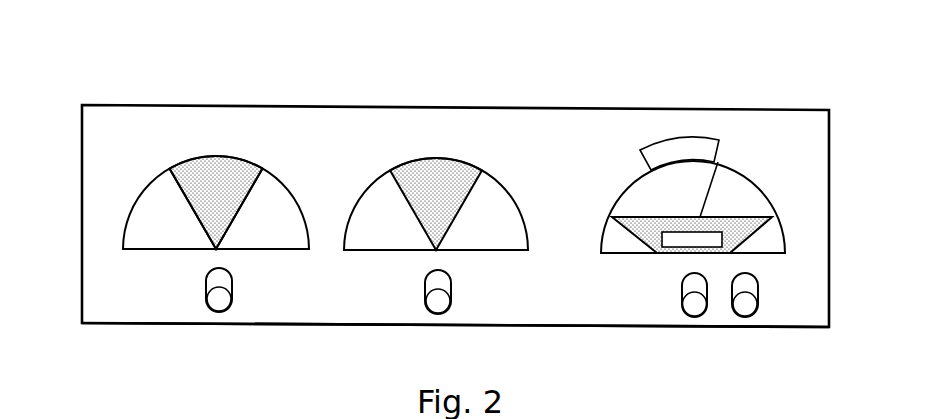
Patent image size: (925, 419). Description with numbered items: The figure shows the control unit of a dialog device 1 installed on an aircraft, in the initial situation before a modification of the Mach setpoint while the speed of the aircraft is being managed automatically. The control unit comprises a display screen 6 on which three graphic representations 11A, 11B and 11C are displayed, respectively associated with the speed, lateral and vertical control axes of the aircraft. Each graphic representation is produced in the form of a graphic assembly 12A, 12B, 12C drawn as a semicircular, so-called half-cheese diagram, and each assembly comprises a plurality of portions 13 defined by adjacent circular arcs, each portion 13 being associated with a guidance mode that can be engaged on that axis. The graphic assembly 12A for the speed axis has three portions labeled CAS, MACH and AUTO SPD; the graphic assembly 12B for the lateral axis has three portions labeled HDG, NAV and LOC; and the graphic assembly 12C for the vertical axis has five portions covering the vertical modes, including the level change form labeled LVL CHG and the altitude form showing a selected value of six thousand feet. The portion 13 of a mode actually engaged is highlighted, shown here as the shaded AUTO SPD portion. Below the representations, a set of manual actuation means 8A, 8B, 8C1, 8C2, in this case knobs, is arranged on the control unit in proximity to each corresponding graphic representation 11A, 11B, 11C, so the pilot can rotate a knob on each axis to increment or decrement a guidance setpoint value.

The dialog device 1 is at (90, 83).
The display screen 6 is at (597, 330).
The manual actuation means 8A is at (232, 303).
The manual actuation means 8B is at (425, 310).
The manual actuation means 8C1 is at (683, 315).
The manual actuation means 8C2 is at (757, 308).
The graphic representation 11A is at (219, 130).
The graphic representation 11B is at (433, 137).
The graphic representation 11C is at (670, 130).
The graphic assembly 12A is at (162, 250).
The graphic assembly 12B is at (500, 252).
The graphic assembly 12C is at (757, 258).
The portion 13 is at (148, 192).